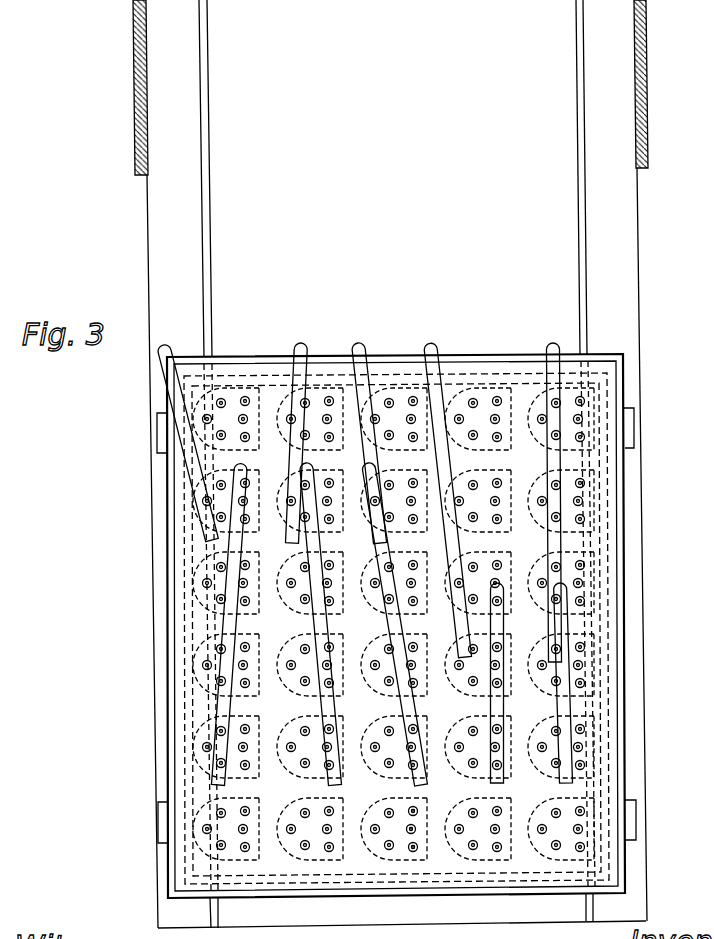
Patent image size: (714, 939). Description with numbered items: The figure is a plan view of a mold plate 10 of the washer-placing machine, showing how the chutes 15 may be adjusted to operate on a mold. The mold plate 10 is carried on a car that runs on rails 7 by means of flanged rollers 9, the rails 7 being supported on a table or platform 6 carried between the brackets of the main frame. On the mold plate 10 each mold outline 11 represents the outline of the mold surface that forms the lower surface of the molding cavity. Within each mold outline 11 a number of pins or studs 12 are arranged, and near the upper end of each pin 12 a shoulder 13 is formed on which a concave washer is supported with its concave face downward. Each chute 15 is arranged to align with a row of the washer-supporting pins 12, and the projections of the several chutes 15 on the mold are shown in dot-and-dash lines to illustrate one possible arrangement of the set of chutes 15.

The table or platform 6 is at (147, 252).
The rails 7 is at (207, 213).
The flanged rollers 9 is at (220, 380).
The mold plate 10 is at (597, 705).
The outline of the mold surface 11 is at (588, 570).
The pins or studs 12 is at (578, 663).
The shoulders 13 is at (413, 846).
The rods 15 is at (300, 342).